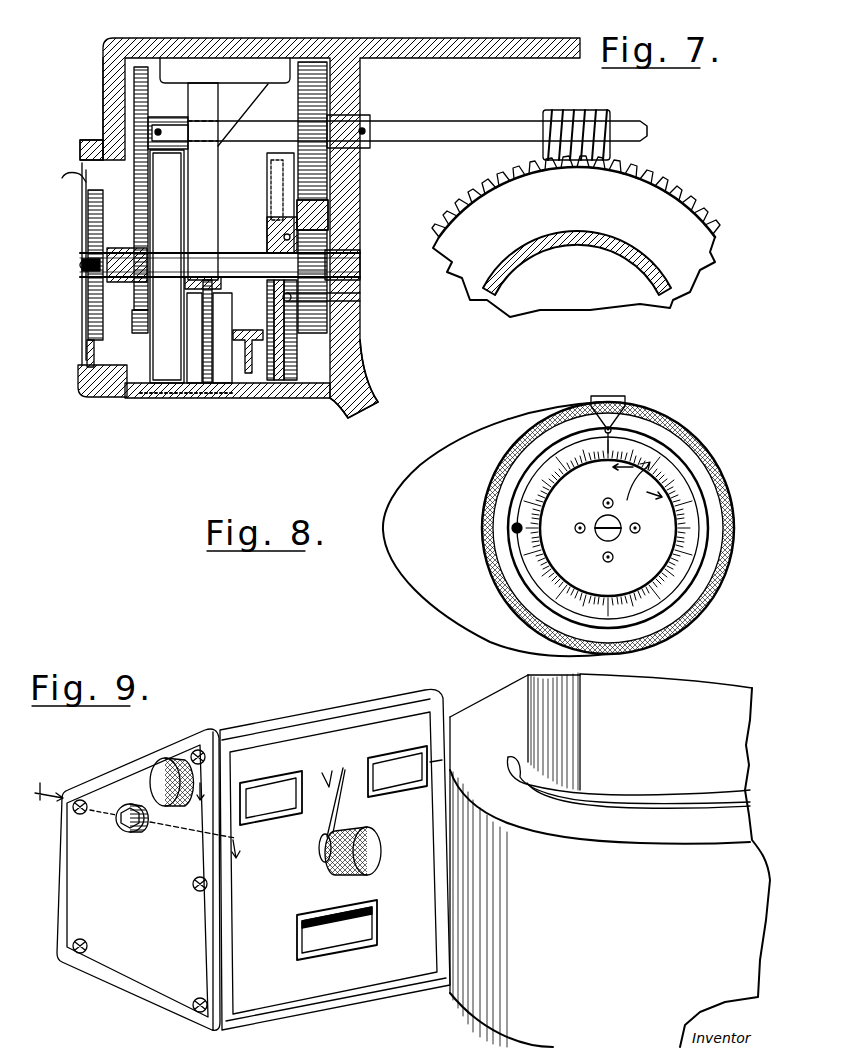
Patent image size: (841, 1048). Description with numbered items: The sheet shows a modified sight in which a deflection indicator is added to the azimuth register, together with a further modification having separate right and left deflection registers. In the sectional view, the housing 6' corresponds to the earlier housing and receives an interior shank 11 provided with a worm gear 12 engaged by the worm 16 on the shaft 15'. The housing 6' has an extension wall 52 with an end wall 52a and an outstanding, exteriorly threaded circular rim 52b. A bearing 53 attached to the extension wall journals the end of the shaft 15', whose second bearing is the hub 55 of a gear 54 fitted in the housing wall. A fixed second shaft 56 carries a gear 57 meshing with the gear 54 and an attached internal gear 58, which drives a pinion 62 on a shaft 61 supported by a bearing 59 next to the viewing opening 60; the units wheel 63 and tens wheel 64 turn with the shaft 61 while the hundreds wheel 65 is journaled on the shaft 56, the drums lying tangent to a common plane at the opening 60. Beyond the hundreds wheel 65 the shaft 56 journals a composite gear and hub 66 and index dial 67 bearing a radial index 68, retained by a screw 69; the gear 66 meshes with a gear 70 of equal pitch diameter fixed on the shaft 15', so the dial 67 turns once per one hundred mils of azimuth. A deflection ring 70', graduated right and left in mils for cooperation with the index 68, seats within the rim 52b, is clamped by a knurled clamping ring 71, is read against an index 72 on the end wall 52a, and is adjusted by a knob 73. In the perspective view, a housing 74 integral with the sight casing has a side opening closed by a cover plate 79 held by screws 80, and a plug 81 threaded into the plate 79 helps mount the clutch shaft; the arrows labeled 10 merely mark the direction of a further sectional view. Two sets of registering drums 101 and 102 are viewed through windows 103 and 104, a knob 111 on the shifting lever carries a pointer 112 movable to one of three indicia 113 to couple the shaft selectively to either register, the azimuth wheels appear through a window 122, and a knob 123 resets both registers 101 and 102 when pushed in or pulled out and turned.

In FIG. 7, the housing 6' is at (361, 379).
In FIG. 9, the index mark 10 is at (133, 820).
In FIG. 7, the interior shank 11 is at (590, 246).
In FIG. 7, the worm gear 12 is at (576, 236).
In FIG. 7, the shaft 15' is at (417, 120).
In FIG. 7, the worm 16 is at (607, 120).
In FIG. 7, the extension wall 52 is at (118, 38).
In FIG. 7, the end wall 52a is at (104, 68).
In FIG. 8, the end wall 52a is at (517, 420).
In FIG. 7, the circular rim 52b is at (88, 142).
In FIG. 7, the bearing 53 is at (222, 72).
In FIG. 7, the gear 54 is at (313, 62).
In FIG. 7, the hub 55 is at (362, 120).
In FIG. 7, the second shaft 56 is at (362, 265).
In FIG. 7, the gear 57 is at (320, 298).
In FIG. 7, the internal gear 58 is at (268, 226).
In FIG. 7, the bearing 59 is at (255, 396).
In FIG. 7, the viewing opening 60 is at (152, 397).
In FIG. 7, the shaft 61 is at (247, 333).
In FIG. 7, the pinion 62 is at (297, 350).
In FIG. 7, the units wheel 63 is at (226, 386).
In FIG. 7, the tens wheel 64 is at (192, 386).
In FIG. 7, the hundreds wheel 65 is at (168, 386).
In FIG. 7, the gear and hub 66 is at (133, 330).
In FIG. 7, the index dial 67 is at (90, 215).
In FIG. 8, the index dial 67 is at (607, 528).
In FIG. 8, the index 68 is at (637, 493).
In FIG. 7, the screw 69 is at (82, 270).
In FIG. 8, the screw 69 is at (600, 536).
In FIG. 7, the gear 70 is at (161, 188).
In FIG. 7, the deflection ring 70' is at (65, 355).
In FIG. 8, the deflection ring 70' is at (585, 528).
In FIG. 7, the knurled clamping ring 71 is at (80, 392).
In FIG. 8, the knurled clamping ring 71 is at (722, 470).
In FIG. 8, the index 72 is at (612, 406).
In FIG. 7, the knob 73 is at (66, 182).
In FIG. 8, the knob 73 is at (512, 530).
In FIG. 9, the housing 74 is at (287, 720).
In FIG. 9, the cover plate 79 is at (128, 972).
In FIG. 9, the screws 80 is at (82, 815).
In FIG. 9, the plug 81 is at (132, 833).
In FIG. 9, the register 101 is at (268, 782).
In FIG. 9, the register 102 is at (405, 757).
In FIG. 9, the window 103 is at (250, 786).
In FIG. 9, the window 104 is at (442, 760).
In FIG. 9, the knob 111 is at (381, 852).
In FIG. 9, the pointer 112 is at (326, 834).
In FIG. 9, the indicia 113 is at (327, 790).
In FIG. 9, the window 122 is at (378, 924).
In FIG. 9, the knob 123 is at (162, 768).